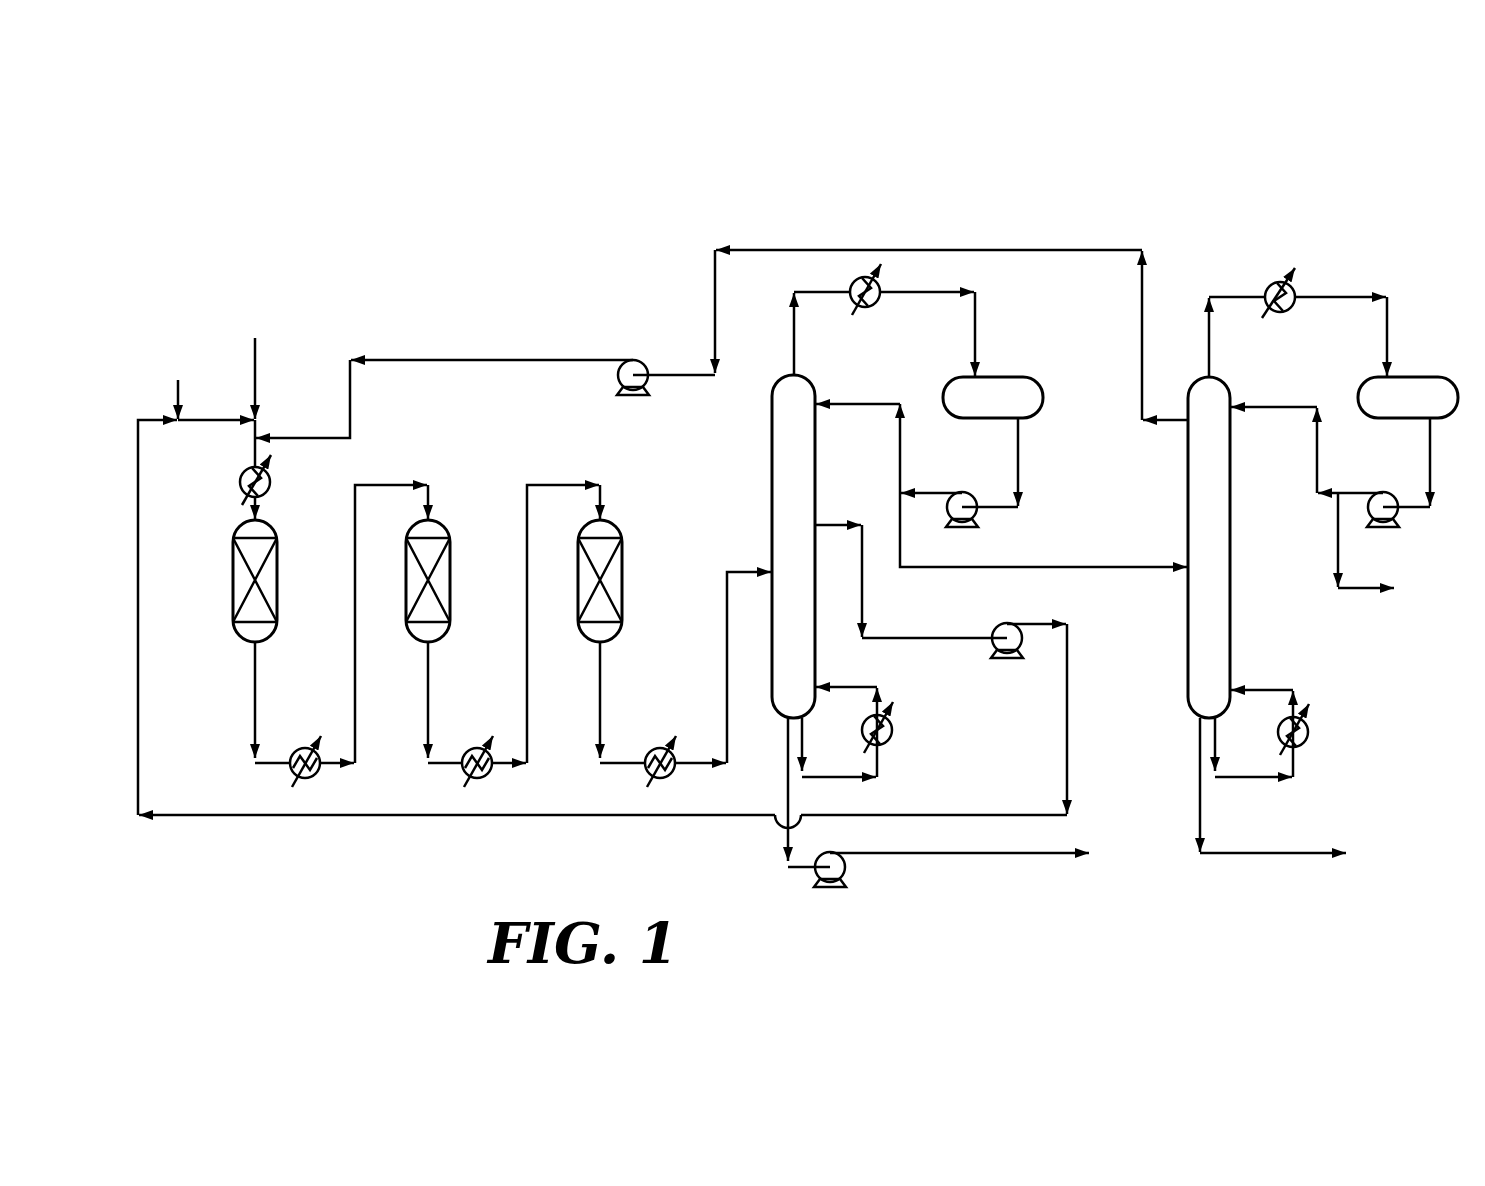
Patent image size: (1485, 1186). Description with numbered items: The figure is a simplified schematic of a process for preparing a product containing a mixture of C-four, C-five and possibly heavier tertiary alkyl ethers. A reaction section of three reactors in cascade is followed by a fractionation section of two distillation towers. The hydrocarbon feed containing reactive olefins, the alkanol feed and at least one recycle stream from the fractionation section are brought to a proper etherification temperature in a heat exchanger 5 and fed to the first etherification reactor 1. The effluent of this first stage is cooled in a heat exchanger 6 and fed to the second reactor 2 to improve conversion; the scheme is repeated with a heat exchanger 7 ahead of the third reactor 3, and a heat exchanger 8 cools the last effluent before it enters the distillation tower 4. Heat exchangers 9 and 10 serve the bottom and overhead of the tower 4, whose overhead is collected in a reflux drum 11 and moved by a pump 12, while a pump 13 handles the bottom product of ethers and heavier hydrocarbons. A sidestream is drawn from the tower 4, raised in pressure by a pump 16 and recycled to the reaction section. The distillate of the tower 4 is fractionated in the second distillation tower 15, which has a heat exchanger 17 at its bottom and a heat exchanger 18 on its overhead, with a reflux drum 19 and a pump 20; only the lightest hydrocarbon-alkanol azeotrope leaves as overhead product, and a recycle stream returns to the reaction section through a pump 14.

The first etherification reactor 1 is at (233, 590).
The second reactor 2 is at (450, 585).
The third reactor 3 is at (622, 585).
The distillation tower 4 is at (772, 455).
The heat exchanger 5 is at (240, 482).
The heat exchanger 6 is at (303, 747).
The heat exchanger 7 is at (477, 747).
The heat exchanger 8 is at (655, 747).
The heat exchanger 9 is at (893, 733).
The heat exchanger 10 is at (877, 302).
The reflux drum 11 is at (1010, 375).
The pump 12 is at (975, 510).
The pump 13 is at (848, 870).
The pump 14 is at (640, 358).
The second distillation tower 15 is at (1230, 625).
The pump 16 is at (992, 632).
The heat exchanger 17 is at (1310, 733).
The heat exchanger 18 is at (1275, 283).
The reflux drum 19 is at (1428, 375).
The pump 20 is at (1396, 512).